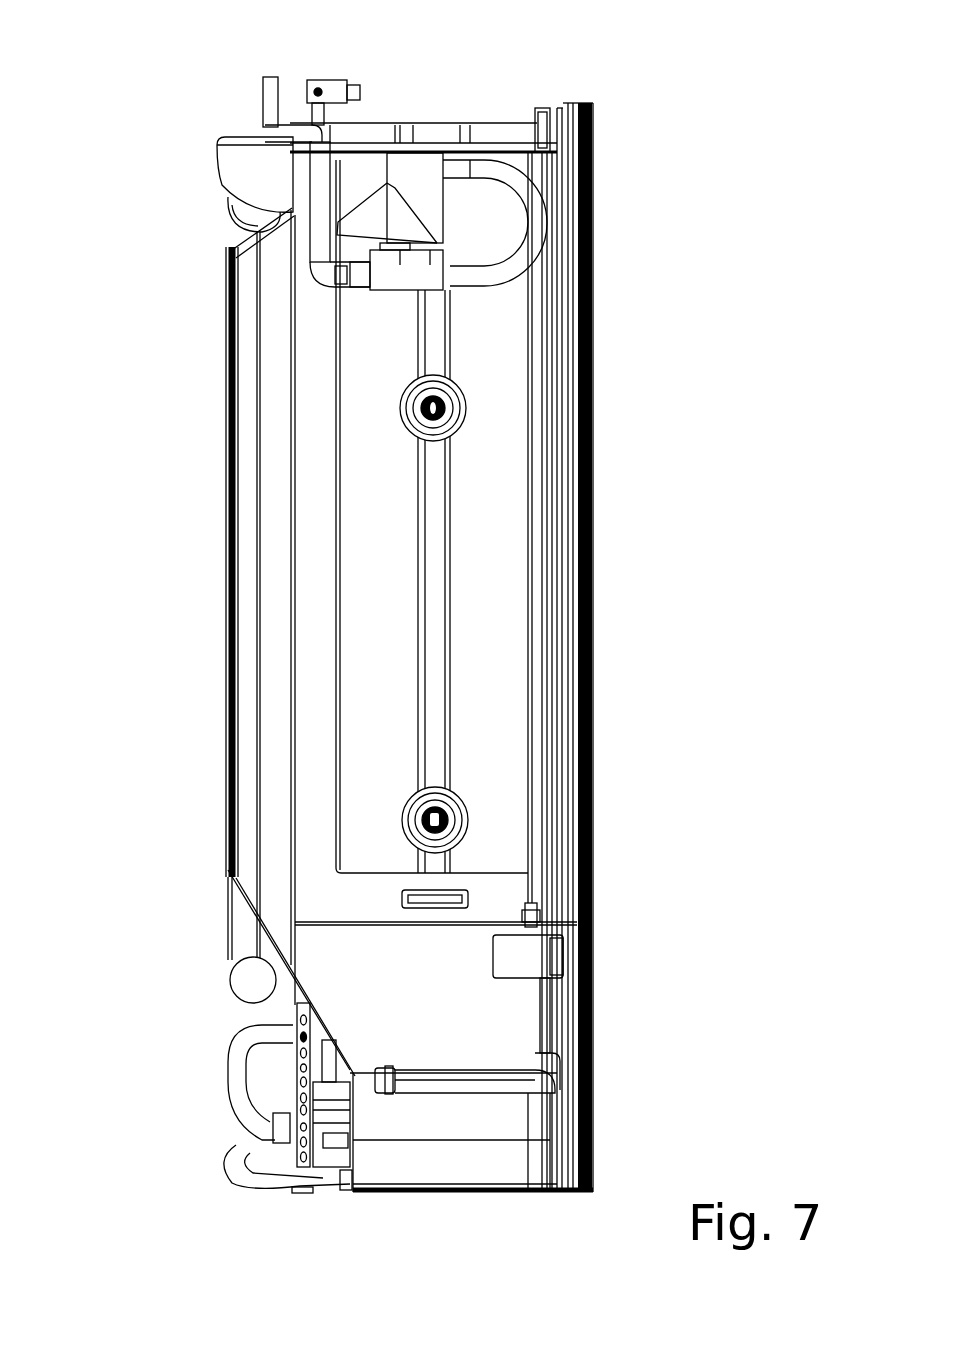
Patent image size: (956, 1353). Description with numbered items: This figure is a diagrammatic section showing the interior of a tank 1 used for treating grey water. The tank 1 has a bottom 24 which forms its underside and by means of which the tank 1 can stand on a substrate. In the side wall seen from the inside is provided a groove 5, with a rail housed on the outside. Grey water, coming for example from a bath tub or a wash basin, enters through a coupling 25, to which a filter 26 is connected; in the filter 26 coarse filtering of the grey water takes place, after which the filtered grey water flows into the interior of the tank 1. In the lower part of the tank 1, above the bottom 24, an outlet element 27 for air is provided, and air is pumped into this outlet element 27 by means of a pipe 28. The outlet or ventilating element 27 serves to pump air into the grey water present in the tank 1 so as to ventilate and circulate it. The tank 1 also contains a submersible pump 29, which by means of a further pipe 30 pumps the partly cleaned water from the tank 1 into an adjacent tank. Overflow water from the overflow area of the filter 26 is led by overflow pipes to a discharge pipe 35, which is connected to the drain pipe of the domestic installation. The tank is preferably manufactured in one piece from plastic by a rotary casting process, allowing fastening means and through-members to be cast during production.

The tank 1 is at (517, 628).
The groove 5 is at (433, 475).
The bottom 24 is at (500, 1193).
The coupling 25 is at (237, 163).
The filter 26 is at (417, 170).
The outlet element 27 is at (505, 1078).
The pipe 28 is at (544, 777).
The submersible pump 29 is at (535, 953).
The further pipe 30 is at (530, 872).
The discharge pipe 35 is at (238, 937).